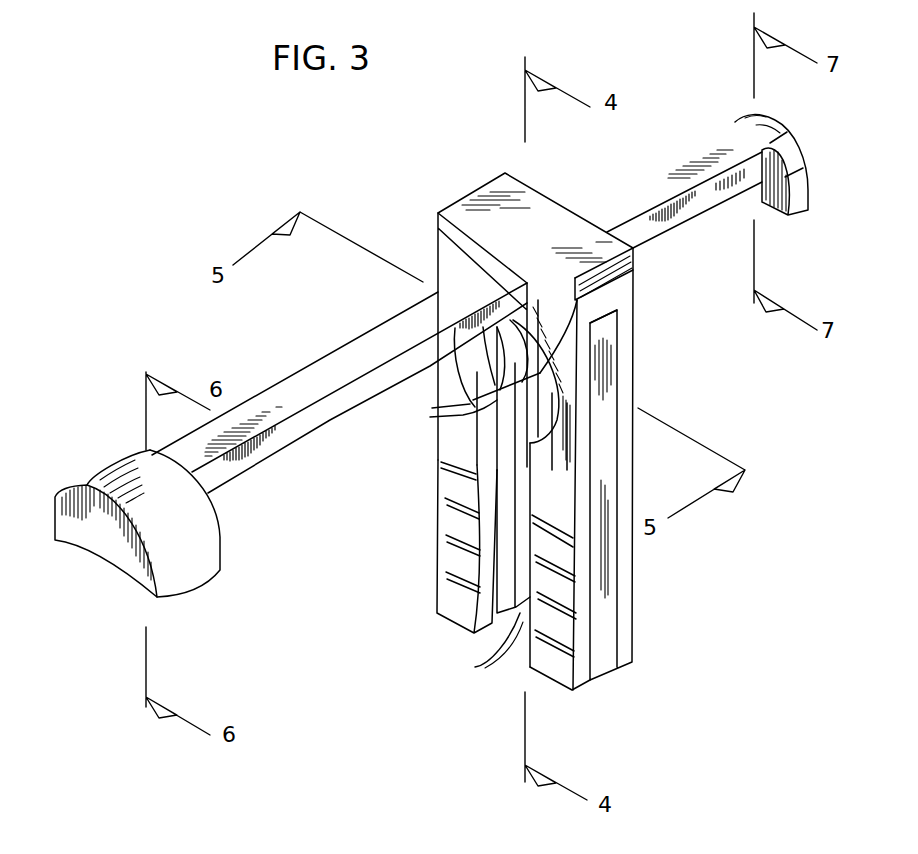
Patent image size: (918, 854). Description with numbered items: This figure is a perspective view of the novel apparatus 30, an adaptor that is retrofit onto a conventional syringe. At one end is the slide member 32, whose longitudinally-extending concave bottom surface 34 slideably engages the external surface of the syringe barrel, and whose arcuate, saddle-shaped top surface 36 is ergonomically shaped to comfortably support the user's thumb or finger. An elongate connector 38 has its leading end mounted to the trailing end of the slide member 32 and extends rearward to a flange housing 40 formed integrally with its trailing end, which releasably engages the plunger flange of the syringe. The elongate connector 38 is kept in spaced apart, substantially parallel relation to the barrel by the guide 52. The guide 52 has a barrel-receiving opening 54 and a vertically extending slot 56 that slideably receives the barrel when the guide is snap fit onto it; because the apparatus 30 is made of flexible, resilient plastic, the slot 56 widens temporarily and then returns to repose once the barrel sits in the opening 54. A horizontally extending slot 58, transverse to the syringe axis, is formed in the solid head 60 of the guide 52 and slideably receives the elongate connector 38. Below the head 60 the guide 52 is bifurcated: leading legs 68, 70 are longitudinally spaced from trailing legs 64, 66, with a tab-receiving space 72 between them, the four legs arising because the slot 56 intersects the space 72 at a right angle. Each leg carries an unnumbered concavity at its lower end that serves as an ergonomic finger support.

The apparatus 30 is at (200, 205).
The slide member 32 is at (86, 478).
The concave bottom surface 34 is at (100, 548).
The saddle-shaped top surface 36 is at (207, 537).
The elongate connector 38 is at (287, 378).
The flange housing 40 is at (792, 125).
The guide 52 is at (428, 452).
The barrel-receiving opening 54 is at (470, 408).
The vertically extending slot 56 is at (475, 669).
The horizontally extending slot 58 is at (460, 258).
The solid head 60 is at (515, 220).
The trailing leg 64 is at (633, 360).
The trailing leg 66 is at (580, 306).
The leading leg 68 is at (590, 583).
The leading leg 70 is at (437, 545).
The tab-receiving space 72 is at (500, 480).